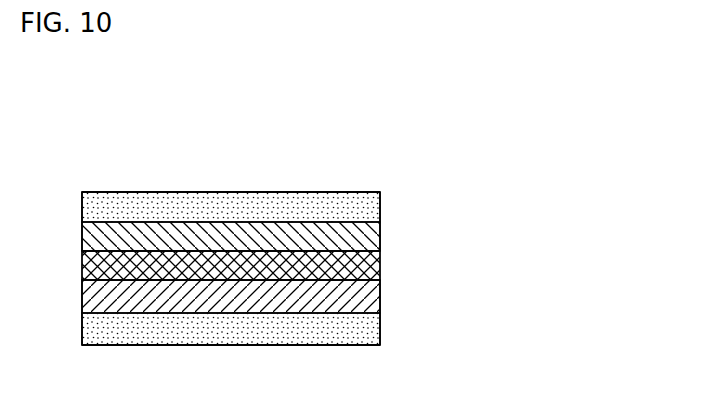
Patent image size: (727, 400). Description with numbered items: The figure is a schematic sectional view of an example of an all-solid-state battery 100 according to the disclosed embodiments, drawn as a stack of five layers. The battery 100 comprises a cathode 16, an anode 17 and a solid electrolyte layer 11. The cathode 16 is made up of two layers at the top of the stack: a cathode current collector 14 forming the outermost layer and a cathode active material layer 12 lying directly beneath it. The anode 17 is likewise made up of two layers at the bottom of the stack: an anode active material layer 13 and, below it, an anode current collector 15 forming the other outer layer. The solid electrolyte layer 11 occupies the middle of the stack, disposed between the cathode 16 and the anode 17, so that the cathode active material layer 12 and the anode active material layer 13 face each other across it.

The all-solid-state battery 100 is at (73, 137).
The solid electrolyte layer 11 is at (380, 255).
The cathode active material layer 12 is at (380, 224).
The anode active material layer 13 is at (380, 293).
The cathode current collector 14 is at (380, 201).
The anode current collector 15 is at (380, 323).
The cathode 16 is at (451, 185).
The anode 17 is at (451, 295).